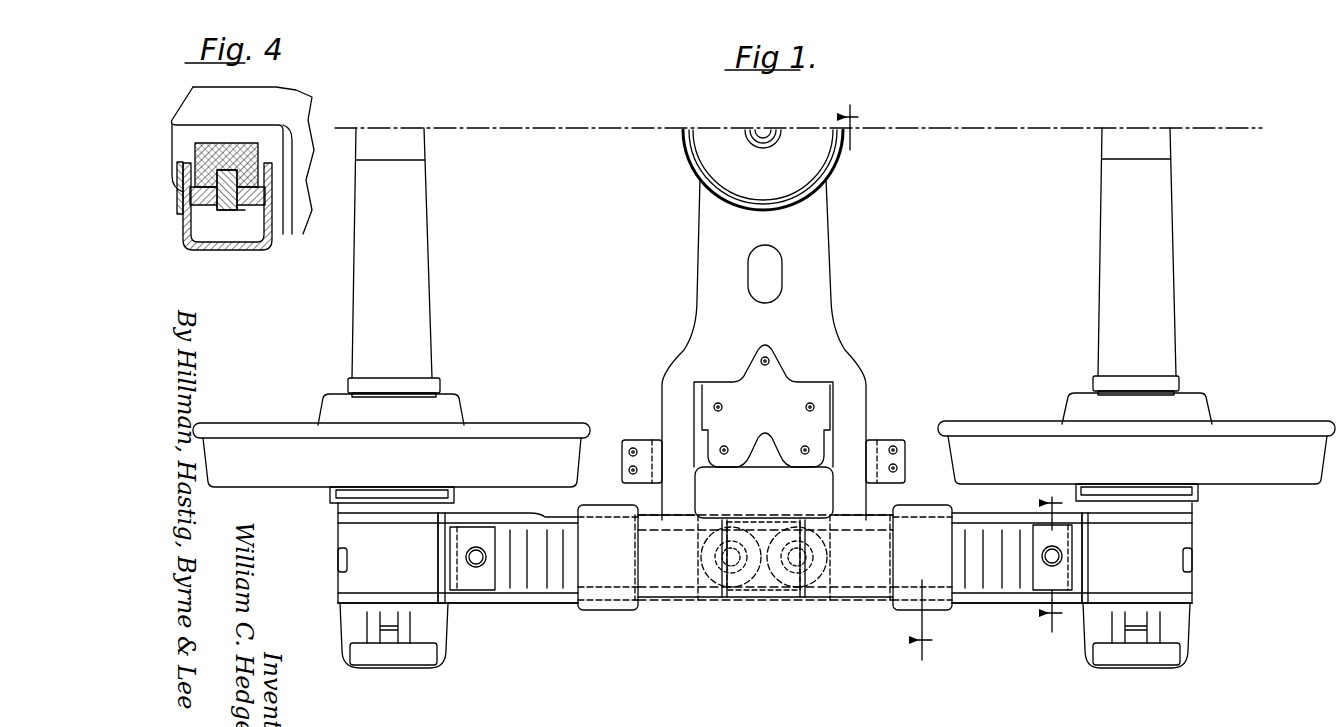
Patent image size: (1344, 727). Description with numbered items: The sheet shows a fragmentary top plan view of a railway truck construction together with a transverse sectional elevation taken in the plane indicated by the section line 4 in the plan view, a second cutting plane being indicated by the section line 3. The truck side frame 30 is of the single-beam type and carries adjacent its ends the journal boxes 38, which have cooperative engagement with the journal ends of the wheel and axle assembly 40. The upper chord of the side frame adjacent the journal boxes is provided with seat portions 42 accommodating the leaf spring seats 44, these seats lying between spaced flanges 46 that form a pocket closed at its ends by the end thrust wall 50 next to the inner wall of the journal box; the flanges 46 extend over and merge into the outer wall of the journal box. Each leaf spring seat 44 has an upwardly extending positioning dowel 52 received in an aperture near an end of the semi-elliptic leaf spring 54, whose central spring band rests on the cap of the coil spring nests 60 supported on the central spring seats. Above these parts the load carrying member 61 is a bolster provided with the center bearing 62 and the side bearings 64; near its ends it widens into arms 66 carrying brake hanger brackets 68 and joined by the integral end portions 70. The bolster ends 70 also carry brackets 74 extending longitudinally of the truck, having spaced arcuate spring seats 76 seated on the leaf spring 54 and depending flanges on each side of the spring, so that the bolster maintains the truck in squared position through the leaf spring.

In FIG. 1, the section line 3- 3 is at (892, 375).
In FIG. 1, the section line 4- 4 is at (1051, 559).
In FIG. 4, the truck side frame 30 is at (268, 241).
In FIG. 1, the journal box 38 is at (352, 622).
In FIG. 1, the wheel and axle assembly 40 is at (514, 434).
In FIG. 4, the seat portion 42 is at (240, 207).
In FIG. 4, the leaf spring seat 44 is at (222, 208).
In FIG. 4, the flange 46 is at (182, 192).
In FIG. 1, the flange 46 is at (1008, 593).
In FIG. 1, the end thrust wall 50 is at (442, 576).
In FIG. 4, the positioning dowel 52 is at (226, 198).
In FIG. 1, the positioning dowel 52 is at (475, 557).
In FIG. 4, the leaf spring 54 is at (218, 160).
In FIG. 1, the leaf spring 54 is at (552, 578).
In FIG. 1, the coil spring nest 60 is at (779, 577).
In FIG. 4, the load carrying member 61 is at (300, 102).
In FIG. 1, the load carrying member 61 is at (820, 215).
In FIG. 1, the center bearing 62 is at (810, 160).
In FIG. 1, the side bearing 64 is at (803, 393).
In FIG. 1, the arm 66 is at (855, 445).
In FIG. 1, the brake hanger bracket 68 is at (905, 440).
In FIG. 1, the end portion 70 is at (673, 575).
In FIG. 1, the bracket 74 is at (855, 577).
In FIG. 1, the arcuate spring seat 76 is at (604, 574).